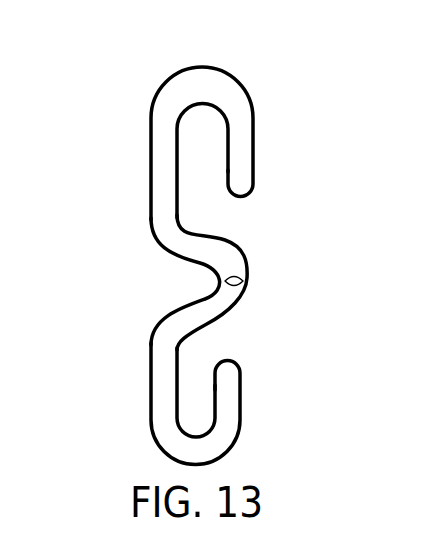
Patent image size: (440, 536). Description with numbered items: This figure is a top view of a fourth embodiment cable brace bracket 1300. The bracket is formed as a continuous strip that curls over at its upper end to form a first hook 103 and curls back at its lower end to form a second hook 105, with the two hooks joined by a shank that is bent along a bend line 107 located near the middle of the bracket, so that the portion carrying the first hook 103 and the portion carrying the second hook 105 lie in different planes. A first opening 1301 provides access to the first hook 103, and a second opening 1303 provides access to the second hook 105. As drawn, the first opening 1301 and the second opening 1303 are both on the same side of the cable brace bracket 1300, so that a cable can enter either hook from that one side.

The cable brace bracket 1300 is at (128, 60).
The first opening 1301 is at (307, 201).
The second opening 1303 is at (307, 325).
The first hook 103 is at (206, 190).
The second hook 105 is at (204, 361).
The bend line 107 is at (243, 281).